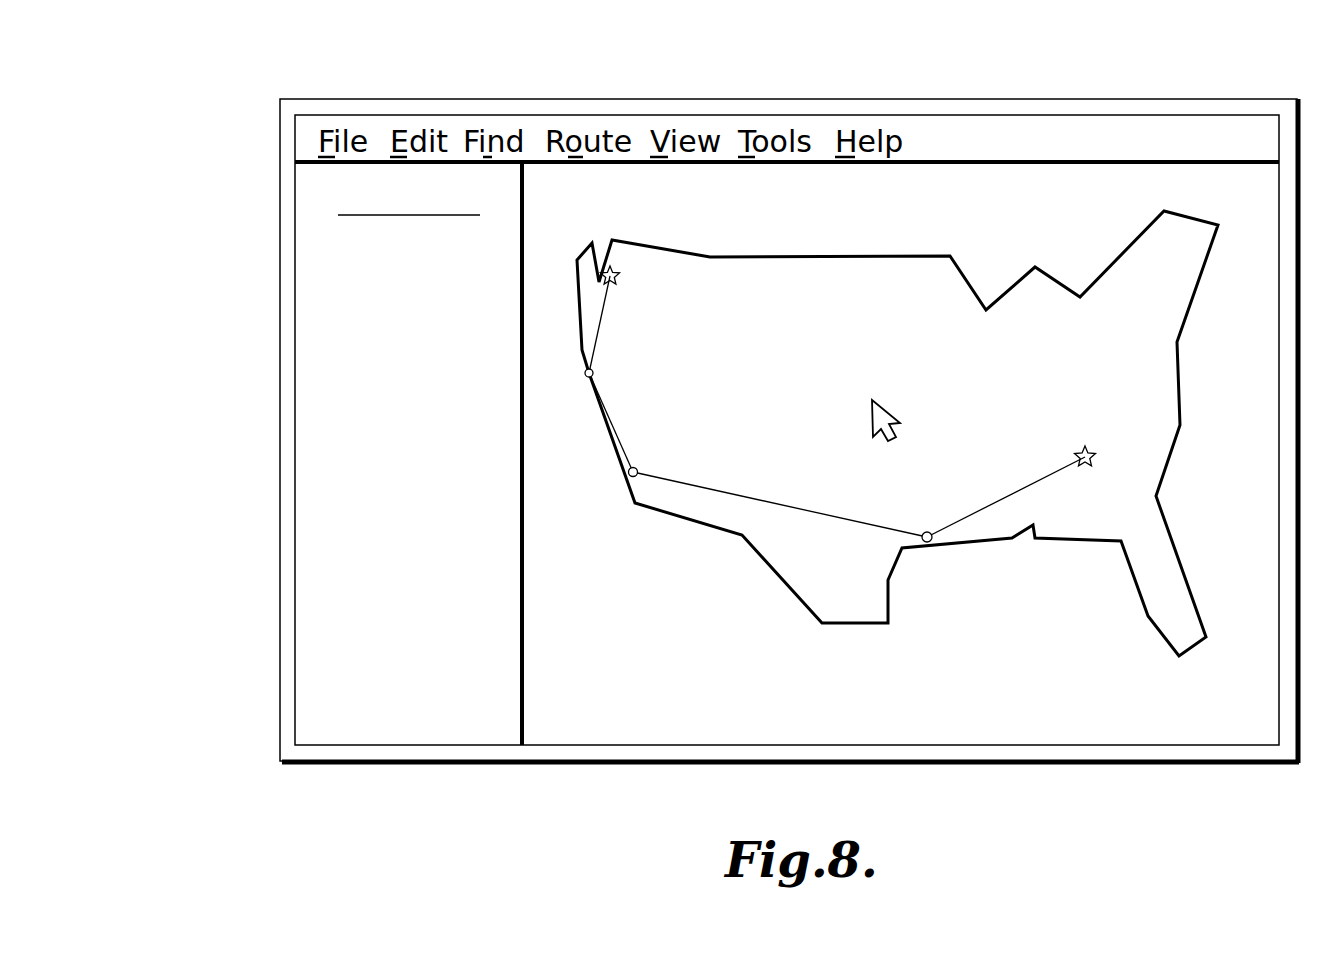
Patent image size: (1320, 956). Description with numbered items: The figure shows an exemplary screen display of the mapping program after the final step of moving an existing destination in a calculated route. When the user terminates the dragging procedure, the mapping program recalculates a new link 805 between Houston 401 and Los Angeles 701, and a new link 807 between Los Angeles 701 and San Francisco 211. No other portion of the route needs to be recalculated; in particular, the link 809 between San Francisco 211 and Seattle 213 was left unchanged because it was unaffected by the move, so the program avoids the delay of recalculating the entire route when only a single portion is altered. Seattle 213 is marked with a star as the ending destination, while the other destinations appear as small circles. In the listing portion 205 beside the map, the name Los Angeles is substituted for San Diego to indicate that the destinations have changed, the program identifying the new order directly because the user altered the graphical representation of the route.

The listing portion 205 is at (320, 562).
The San Francisco 211 is at (585, 375).
The Seattle 213 is at (612, 270).
The Houston 401 is at (928, 542).
The Los Angeles 701 is at (623, 478).
The link 805 is at (762, 502).
The link 807 is at (610, 425).
The link 809 is at (598, 332).